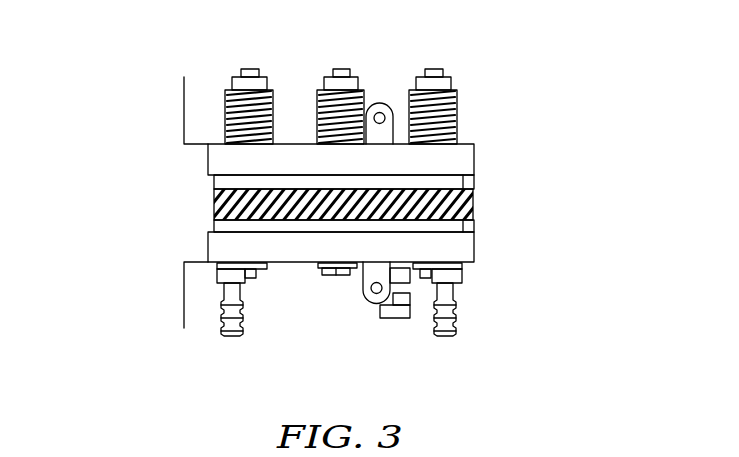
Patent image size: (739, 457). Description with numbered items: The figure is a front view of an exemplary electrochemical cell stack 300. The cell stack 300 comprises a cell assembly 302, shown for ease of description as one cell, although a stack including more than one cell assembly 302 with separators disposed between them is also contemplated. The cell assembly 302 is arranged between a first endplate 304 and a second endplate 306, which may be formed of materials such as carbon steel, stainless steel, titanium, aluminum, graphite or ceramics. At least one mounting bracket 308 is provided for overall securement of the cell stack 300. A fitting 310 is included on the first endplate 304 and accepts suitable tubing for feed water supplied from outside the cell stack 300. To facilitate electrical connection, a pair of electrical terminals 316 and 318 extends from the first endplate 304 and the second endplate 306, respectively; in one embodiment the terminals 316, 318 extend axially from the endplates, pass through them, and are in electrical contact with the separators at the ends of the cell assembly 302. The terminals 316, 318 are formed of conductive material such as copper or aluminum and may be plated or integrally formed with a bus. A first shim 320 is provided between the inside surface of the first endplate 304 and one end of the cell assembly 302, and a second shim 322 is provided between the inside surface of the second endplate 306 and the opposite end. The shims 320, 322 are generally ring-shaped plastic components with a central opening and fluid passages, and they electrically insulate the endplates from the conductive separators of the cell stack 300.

The electrochemical cell stack 300 is at (326, 217).
The cell assembly 302 is at (183, 207).
The first endplate 304 is at (474, 245).
The second endplate 306 is at (474, 157).
The mounting bracket 308 is at (184, 113).
The fitting 310 is at (228, 336).
The electrical terminal 316 is at (373, 303).
The electrical terminal 318 is at (380, 103).
The first shim 320 is at (213, 226).
The second shim 322 is at (213, 182).